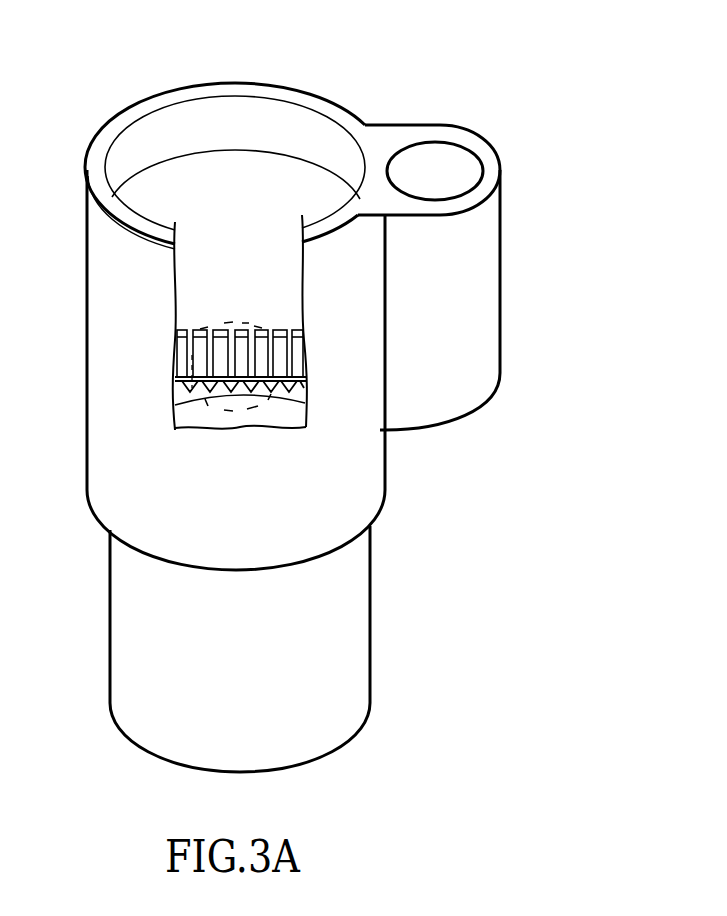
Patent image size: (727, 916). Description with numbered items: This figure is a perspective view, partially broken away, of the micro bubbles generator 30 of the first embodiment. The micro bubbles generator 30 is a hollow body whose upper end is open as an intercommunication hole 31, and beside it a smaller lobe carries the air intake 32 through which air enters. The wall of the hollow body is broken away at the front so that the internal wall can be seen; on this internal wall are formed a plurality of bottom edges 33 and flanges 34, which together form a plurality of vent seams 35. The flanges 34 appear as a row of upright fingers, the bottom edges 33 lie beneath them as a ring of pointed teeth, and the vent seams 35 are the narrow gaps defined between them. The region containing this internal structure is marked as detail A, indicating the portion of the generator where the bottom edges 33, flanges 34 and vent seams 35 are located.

The micro bubbles generator 30 is at (340, 488).
The intercommunication hole 31 is at (255, 123).
The air intake 32 is at (452, 163).
The bottom edges 33 is at (182, 381).
The flanges 34 is at (215, 340).
The vent seams 35 is at (182, 387).
The detail A is at (218, 332).